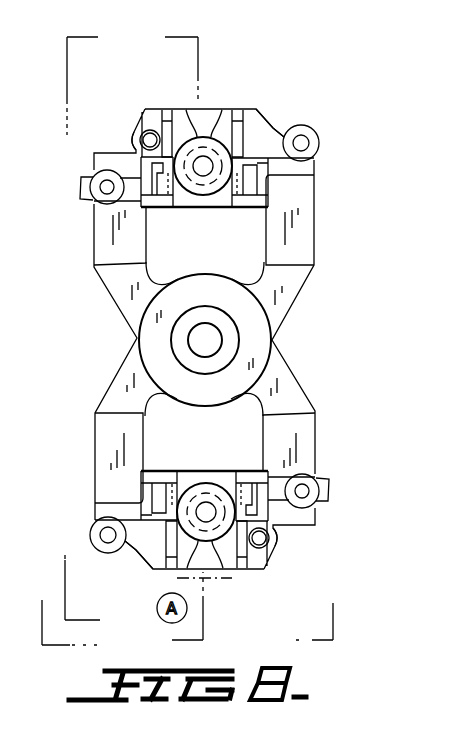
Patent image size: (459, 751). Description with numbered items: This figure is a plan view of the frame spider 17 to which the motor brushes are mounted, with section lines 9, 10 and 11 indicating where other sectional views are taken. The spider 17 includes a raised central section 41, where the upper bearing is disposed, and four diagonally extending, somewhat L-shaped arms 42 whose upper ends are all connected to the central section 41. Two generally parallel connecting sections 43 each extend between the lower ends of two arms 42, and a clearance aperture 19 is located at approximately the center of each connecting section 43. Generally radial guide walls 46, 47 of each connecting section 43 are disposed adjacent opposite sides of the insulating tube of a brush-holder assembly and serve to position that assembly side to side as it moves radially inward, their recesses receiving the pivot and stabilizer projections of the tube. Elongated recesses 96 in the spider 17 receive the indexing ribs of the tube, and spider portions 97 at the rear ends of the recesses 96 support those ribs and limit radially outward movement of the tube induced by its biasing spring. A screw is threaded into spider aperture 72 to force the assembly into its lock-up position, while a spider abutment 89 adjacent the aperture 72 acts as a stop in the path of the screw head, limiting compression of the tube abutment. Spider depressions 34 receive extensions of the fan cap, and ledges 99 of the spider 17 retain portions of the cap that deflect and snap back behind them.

The section line 9- 9 is at (177, 339).
The section line 10- 10 is at (99, 332).
The section line 11- 11 is at (189, 607).
The spider 17 is at (283, 90).
The clearance aperture 19 is at (205, 510).
The spider depressions 34 is at (305, 488).
The raised central section 41 is at (247, 345).
The arms 42 is at (300, 437).
The connecting sections 43 is at (298, 532).
The guide wall 46 is at (184, 482).
The guide wall 47 is at (222, 483).
The spider aperture 72 is at (268, 560).
The spider abutment 89 is at (277, 542).
The elongated recesses 96 is at (243, 548).
The spider portions 97 is at (248, 563).
The ledges 99 is at (330, 486).